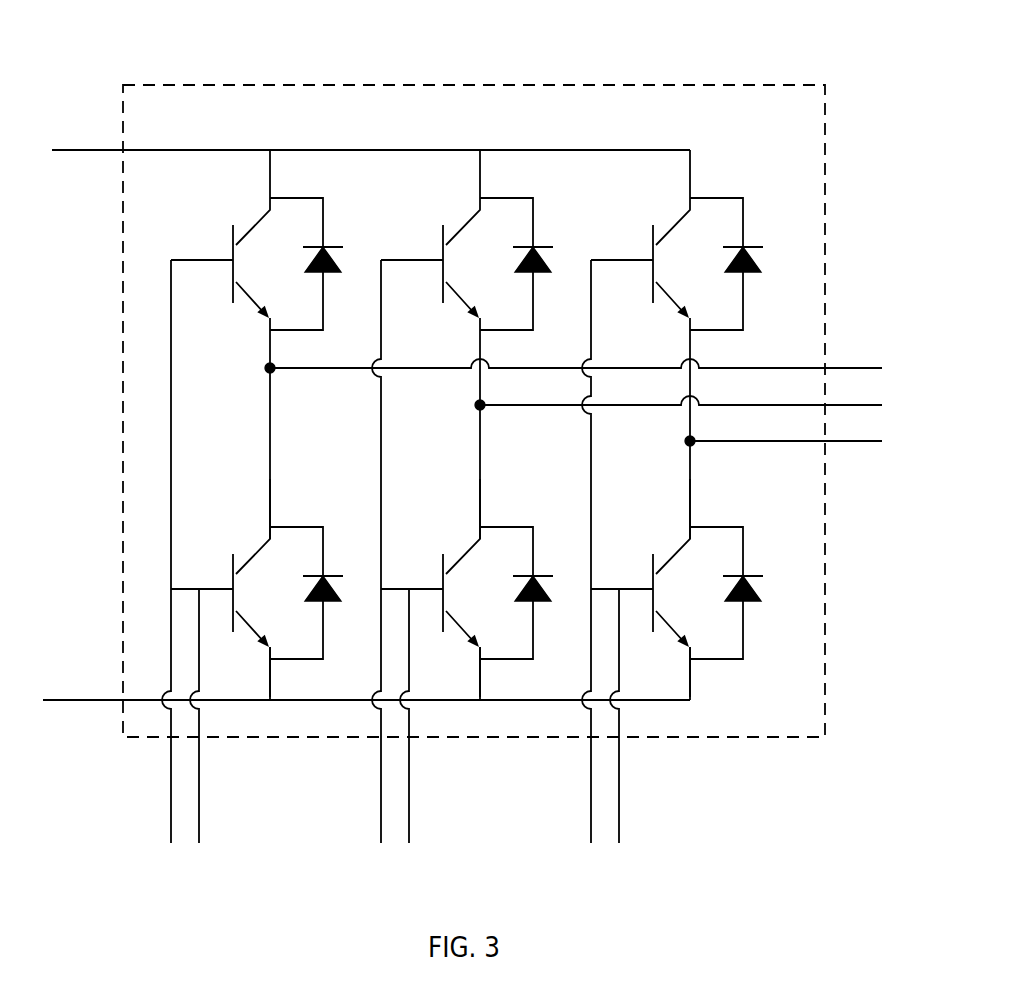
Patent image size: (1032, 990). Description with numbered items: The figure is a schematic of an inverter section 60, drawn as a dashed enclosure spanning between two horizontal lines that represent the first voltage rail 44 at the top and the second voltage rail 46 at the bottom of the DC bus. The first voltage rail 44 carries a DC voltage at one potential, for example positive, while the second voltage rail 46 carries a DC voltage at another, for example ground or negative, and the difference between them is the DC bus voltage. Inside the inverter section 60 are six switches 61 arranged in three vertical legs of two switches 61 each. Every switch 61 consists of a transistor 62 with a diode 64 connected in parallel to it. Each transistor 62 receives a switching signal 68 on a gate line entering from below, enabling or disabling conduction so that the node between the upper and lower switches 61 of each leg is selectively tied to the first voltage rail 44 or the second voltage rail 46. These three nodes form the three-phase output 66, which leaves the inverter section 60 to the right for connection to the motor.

The first voltage rail 44 is at (78, 148).
The second voltage rail 46 is at (72, 698).
The inverter section 60 is at (612, 85).
The switch 61 is at (491, 412).
The transistor 62 is at (257, 227).
The diode 64 is at (350, 255).
The output 66 is at (841, 352).
The switching signal 68 is at (171, 832).